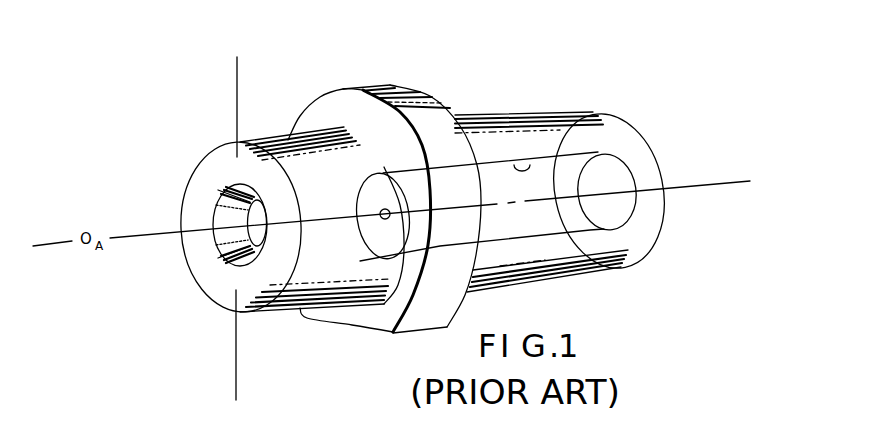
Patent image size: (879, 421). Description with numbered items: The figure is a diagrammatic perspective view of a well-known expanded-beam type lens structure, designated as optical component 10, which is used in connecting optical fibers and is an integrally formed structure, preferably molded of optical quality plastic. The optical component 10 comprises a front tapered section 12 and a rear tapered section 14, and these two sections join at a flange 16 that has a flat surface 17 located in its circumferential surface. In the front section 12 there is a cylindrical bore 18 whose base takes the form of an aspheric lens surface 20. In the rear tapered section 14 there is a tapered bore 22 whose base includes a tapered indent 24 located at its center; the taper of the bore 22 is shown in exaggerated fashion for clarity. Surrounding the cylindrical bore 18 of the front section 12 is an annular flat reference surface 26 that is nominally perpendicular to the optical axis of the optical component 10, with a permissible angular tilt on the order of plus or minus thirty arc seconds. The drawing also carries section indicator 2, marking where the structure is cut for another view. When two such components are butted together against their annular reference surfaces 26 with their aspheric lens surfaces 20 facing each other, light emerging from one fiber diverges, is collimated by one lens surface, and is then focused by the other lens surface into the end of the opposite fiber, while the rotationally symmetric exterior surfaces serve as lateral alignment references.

The section line 2- 2 is at (190, 364).
The optical component 10 is at (514, 92).
The front tapered section 12 is at (260, 139).
The rear tapered section 14 is at (550, 117).
The flange 16 is at (363, 83).
The flat surface 17 is at (342, 328).
The cylindrical bore 18 is at (222, 235).
The aspheric lens surface 20 is at (216, 222).
The tapered bore 22 is at (520, 167).
The tapered indent 24 is at (380, 218).
The annular flat reference surface 26 is at (208, 160).